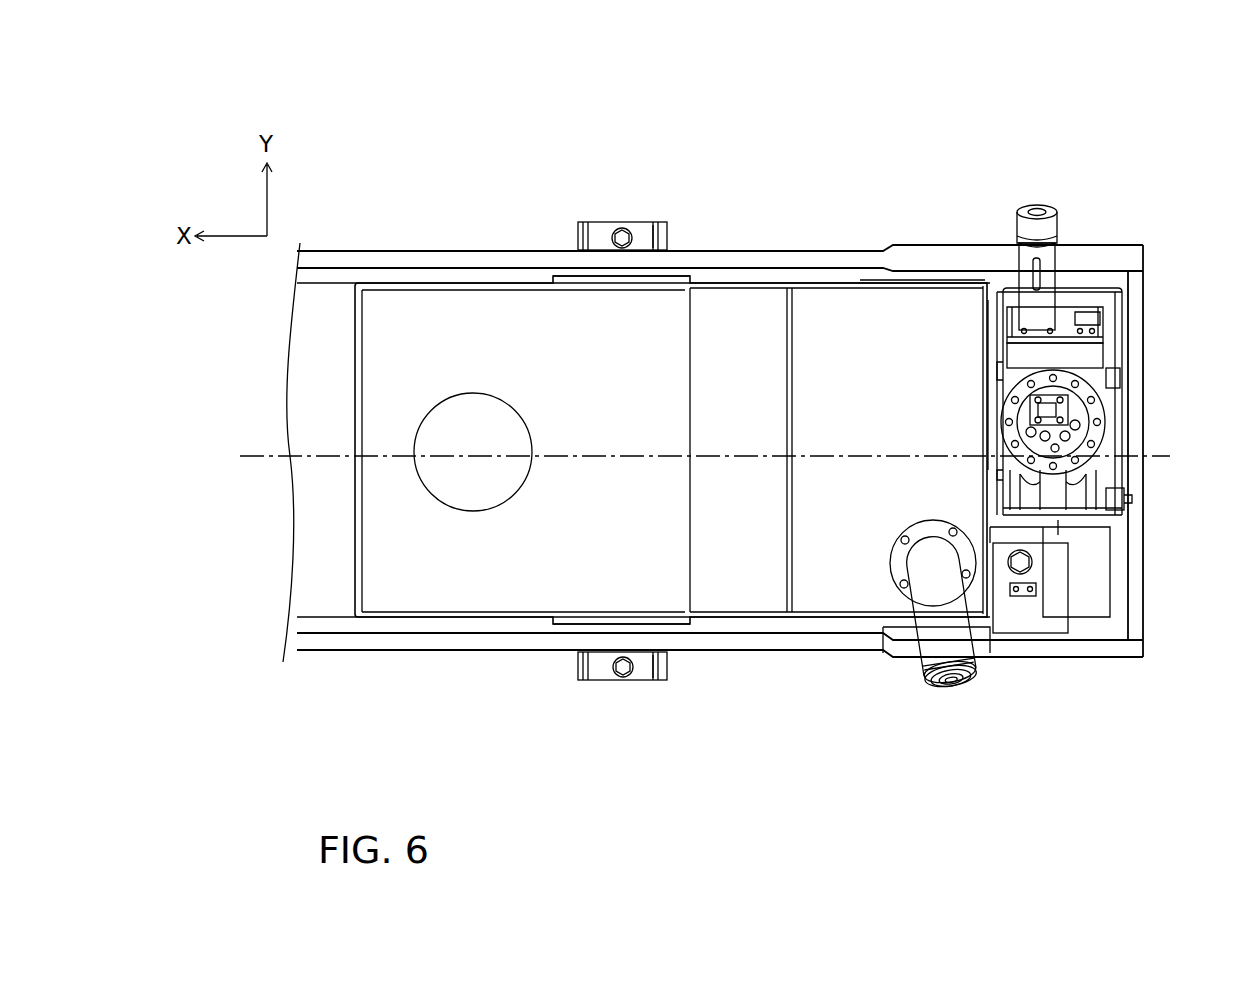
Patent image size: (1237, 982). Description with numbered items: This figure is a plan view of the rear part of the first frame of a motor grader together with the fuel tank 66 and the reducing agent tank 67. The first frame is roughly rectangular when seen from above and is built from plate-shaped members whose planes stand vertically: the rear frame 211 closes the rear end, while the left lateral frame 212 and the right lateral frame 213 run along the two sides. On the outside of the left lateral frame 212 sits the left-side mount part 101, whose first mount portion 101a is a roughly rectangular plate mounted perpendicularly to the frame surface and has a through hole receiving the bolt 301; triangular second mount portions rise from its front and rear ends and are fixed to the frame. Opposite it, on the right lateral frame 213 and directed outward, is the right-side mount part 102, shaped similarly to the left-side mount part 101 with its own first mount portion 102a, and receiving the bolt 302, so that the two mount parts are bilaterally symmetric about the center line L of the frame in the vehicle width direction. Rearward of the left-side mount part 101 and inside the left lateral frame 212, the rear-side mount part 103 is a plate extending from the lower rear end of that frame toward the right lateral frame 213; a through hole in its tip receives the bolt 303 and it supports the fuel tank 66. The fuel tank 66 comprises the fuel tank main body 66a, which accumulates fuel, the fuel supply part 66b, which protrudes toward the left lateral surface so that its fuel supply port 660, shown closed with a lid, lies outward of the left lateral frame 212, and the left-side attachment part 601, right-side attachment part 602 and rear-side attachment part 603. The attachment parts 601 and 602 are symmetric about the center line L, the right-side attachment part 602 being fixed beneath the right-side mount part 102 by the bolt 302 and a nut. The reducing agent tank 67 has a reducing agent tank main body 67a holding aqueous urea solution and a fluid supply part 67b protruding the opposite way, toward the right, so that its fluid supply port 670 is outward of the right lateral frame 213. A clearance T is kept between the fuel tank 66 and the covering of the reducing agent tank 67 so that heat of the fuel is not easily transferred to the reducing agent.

The left-side mount part 101 is at (644, 718).
The first mount portion 101a is at (608, 682).
The right-side mount part 102 is at (650, 188).
The bolt of second clamp bracket 102a is at (627, 230).
The rear-side mount part 103 is at (1045, 566).
The rear frame 211 is at (1133, 350).
The left lateral frame 212 is at (827, 648).
The right lateral frame 213 is at (812, 265).
The bolt 301 is at (573, 640).
The bolt 302 is at (594, 250).
The bolt 303 is at (1022, 566).
The left-side attachment part 601 is at (708, 669).
The right-side attachment part 602 is at (706, 221).
The rear-side attachment part 603 is at (1022, 535).
The fuel tank 66 is at (945, 642).
The fuel tank main body 66a is at (865, 593).
The fuel supply part 66b is at (933, 607).
The fuel supply port 660 is at (971, 691).
The reducing agent tank 67 is at (1095, 321).
The fluid supply port 670 is at (1040, 231).
The reducing agent tank main body 67a is at (1077, 352).
The fluid supply part 67b is at (1042, 279).
The clearance T is at (988, 367).
The center line L is at (714, 457).